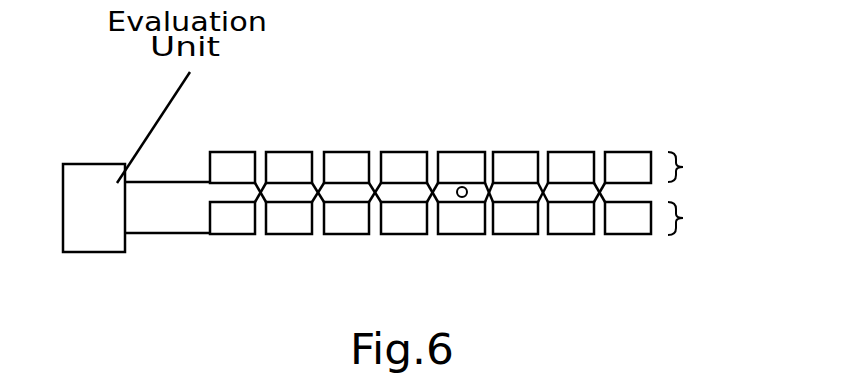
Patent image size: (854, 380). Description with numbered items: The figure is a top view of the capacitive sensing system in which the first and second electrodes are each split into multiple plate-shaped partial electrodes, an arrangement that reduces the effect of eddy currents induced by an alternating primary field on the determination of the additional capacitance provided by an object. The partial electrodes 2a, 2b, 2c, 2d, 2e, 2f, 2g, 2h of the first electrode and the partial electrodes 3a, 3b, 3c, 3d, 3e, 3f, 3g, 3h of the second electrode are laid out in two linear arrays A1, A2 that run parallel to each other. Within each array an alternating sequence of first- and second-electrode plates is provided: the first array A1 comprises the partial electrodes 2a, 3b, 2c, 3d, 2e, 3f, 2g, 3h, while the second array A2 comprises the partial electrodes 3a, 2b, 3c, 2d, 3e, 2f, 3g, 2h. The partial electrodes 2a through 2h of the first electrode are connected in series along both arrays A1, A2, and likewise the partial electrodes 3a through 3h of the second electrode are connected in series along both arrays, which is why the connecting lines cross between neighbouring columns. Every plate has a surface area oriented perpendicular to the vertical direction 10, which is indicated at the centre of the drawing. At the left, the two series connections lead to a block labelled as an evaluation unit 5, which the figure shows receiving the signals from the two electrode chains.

The evaluation unit 5 is at (90, 164).
The partial electrode 2a is at (229, 152).
The partial electrode 2b is at (288, 234).
The partial electrode 2c is at (338, 152).
The partial electrode 2d is at (407, 234).
The partial electrode 2e is at (458, 152).
The partial electrode 2f is at (515, 234).
The partial electrode 2g is at (575, 152).
The partial electrode 2h is at (630, 234).
The partial electrode 3a is at (228, 234).
The partial electrode 3b is at (282, 152).
The partial electrode 3c is at (345, 234).
The partial electrode 3d is at (393, 152).
The partial electrode 3e is at (462, 234).
The partial electrode 3f is at (518, 152).
The partial electrode 3g is at (568, 234).
The partial electrode 3h is at (632, 152).
The vertical direction 10 is at (465, 188).
The first linear array A1 is at (693, 164).
The second linear array A2 is at (693, 217).